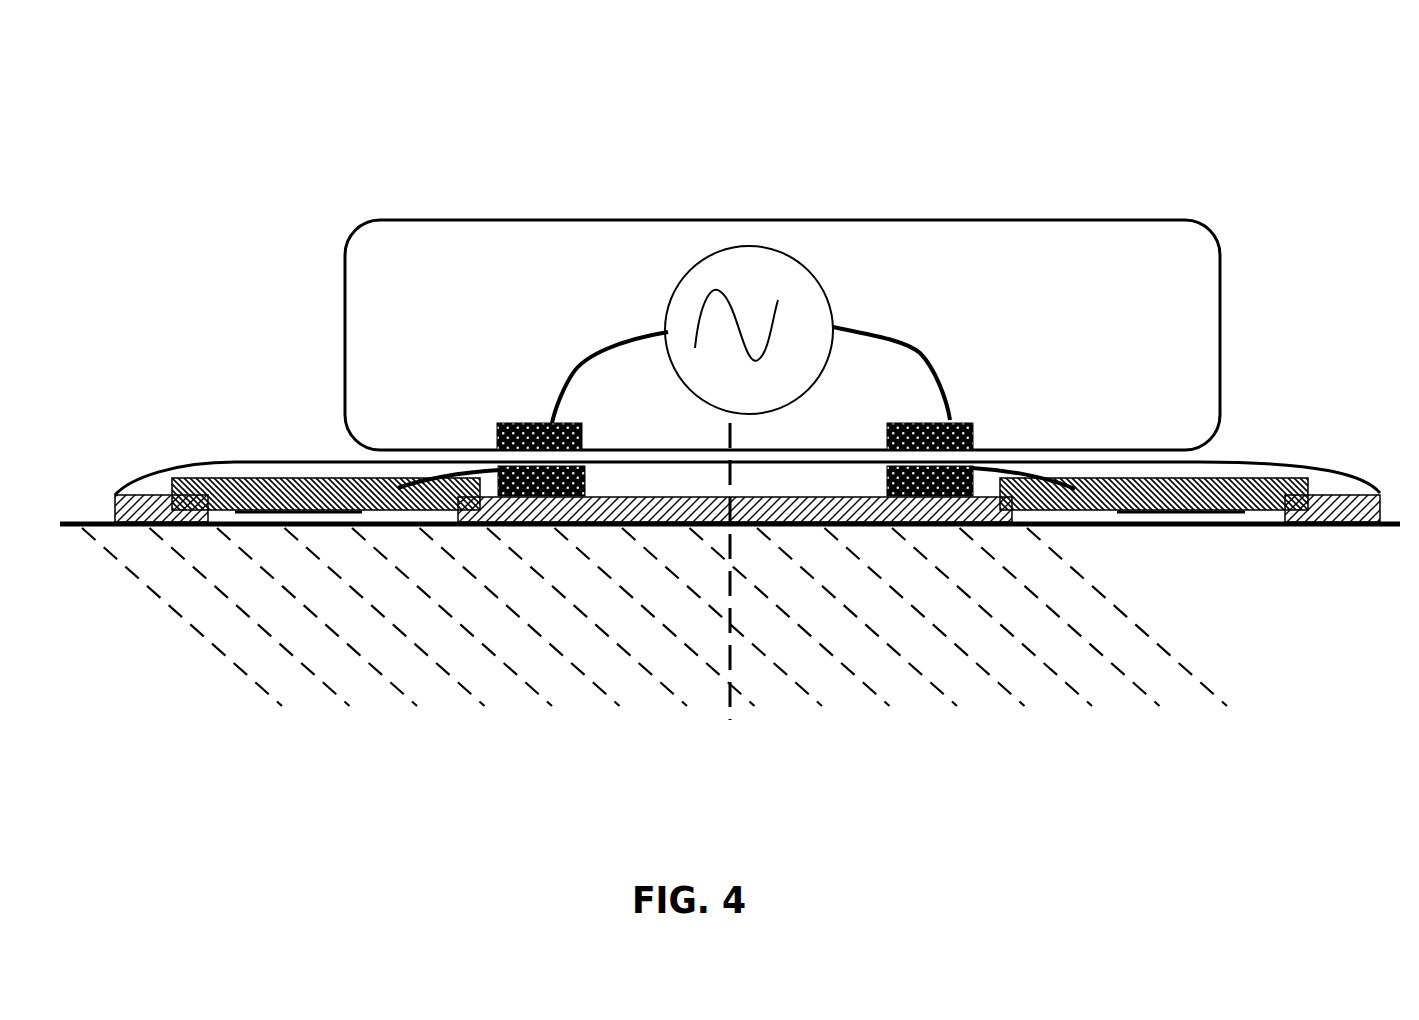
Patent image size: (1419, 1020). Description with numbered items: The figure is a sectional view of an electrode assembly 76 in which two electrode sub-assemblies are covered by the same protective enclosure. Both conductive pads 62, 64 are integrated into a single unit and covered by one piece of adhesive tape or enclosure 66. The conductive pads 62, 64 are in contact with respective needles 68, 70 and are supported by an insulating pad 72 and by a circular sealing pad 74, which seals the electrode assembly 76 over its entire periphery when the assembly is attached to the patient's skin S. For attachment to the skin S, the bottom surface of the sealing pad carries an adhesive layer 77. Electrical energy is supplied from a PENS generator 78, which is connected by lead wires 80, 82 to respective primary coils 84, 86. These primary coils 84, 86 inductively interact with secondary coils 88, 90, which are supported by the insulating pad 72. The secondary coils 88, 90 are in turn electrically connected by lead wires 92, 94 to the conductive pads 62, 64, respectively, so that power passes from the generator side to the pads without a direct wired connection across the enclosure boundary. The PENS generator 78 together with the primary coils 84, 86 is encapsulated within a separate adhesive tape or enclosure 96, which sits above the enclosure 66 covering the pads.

The patient's skin S is at (95, 521).
The conductive pad 62 is at (177, 480).
The conductive pad 64 is at (1293, 527).
The adhesive tape or enclosure 66 is at (215, 465).
The needle 68 is at (362, 512).
The needle 70 is at (1117, 513).
The insulating pad 72 is at (635, 510).
The circular sealing pad 74 is at (1347, 527).
The electrode assembly 76 is at (672, 150).
The adhesive layer 77 is at (250, 530).
The PENS generator 78 is at (747, 278).
The lead wire 80 is at (573, 373).
The lead wire 82 is at (920, 353).
The primary coil 84 is at (503, 423).
The primary coil 86 is at (960, 420).
The secondary coil 88 is at (490, 528).
The secondary coil 90 is at (908, 490).
The lead wire 92 is at (440, 475).
The lead wire 94 is at (1012, 473).
The adhesive tape or enclosure 96 is at (595, 220).